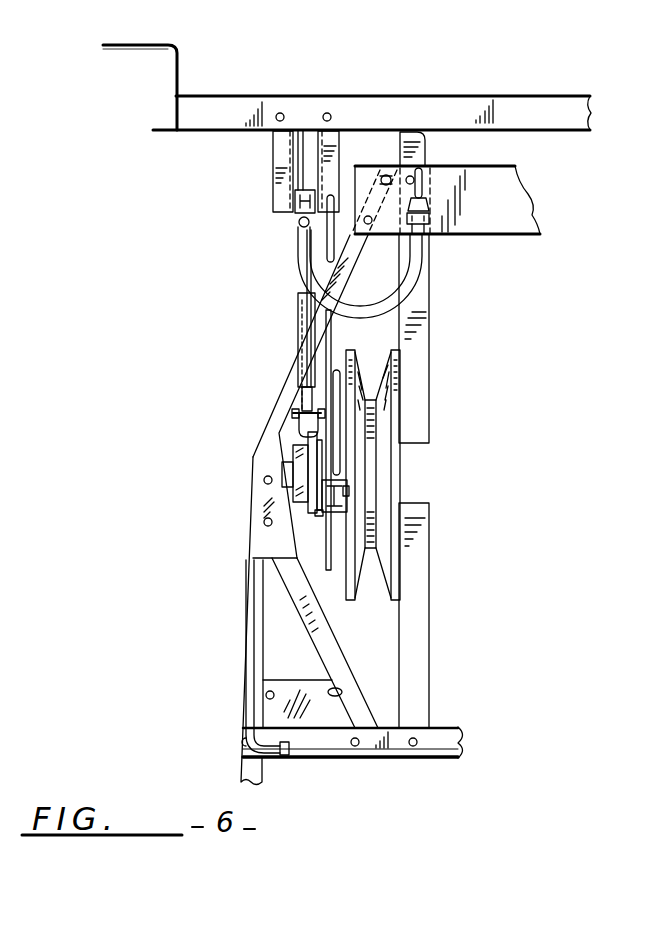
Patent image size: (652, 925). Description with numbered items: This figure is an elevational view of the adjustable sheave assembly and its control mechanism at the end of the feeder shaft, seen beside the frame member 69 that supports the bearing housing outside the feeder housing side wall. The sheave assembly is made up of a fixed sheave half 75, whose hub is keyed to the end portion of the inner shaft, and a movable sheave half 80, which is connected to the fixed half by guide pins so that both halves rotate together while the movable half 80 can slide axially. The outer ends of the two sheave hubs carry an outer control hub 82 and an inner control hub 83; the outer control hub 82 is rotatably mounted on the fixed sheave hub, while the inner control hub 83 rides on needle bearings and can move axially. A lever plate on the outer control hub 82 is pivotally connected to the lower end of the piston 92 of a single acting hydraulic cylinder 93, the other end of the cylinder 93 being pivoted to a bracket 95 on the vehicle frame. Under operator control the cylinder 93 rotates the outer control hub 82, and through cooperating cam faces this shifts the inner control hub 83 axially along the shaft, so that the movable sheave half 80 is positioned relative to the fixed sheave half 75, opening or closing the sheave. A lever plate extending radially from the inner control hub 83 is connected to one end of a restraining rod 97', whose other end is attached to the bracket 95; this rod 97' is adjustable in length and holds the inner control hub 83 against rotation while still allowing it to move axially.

The frame member 69 is at (430, 337).
The sheave half 75 is at (380, 561).
The movable sheave half 80 is at (357, 580).
The outer control hub 82 is at (295, 492).
The inner control hub 83 is at (329, 505).
The piston 92 is at (298, 401).
The hydraulic cylinder 93 is at (298, 303).
The bracket 95 is at (283, 165).
The restraining rod 97' is at (353, 398).